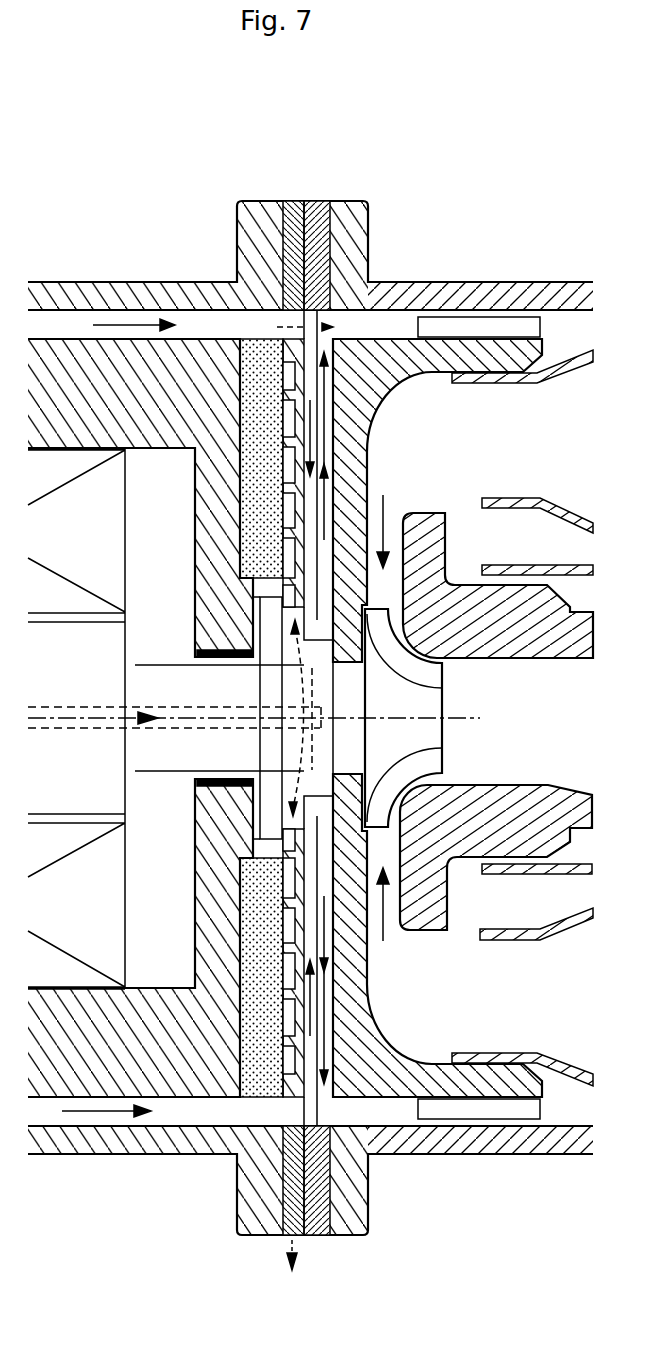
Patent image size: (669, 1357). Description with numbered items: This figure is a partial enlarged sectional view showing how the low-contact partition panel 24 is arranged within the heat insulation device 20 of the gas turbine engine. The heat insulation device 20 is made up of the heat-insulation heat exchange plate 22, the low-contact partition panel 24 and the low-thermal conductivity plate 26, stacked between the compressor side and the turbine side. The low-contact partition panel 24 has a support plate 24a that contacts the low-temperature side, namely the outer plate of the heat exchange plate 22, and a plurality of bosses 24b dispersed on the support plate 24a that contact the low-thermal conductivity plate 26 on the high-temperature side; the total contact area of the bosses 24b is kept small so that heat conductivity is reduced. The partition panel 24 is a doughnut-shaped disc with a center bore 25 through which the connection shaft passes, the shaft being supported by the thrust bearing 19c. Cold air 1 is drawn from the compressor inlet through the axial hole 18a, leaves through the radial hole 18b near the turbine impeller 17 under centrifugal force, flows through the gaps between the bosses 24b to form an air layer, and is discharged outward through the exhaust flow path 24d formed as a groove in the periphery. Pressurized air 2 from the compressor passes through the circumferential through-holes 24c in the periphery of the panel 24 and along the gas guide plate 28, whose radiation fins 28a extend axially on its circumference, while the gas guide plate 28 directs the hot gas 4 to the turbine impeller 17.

The air 1 is at (80, 720).
The pressurized air 2 is at (135, 323).
The hot gas 4 is at (385, 500).
The turbine impeller 17 is at (388, 748).
The axial hole 18a is at (172, 730).
The radial hole 18b is at (312, 696).
The thrust bearing 19c is at (273, 642).
The heat insulation device 20 is at (211, 231).
The heat-insulation heat exchange plate 22 is at (335, 340).
The low-contact partition panel 24 is at (253, 732).
The support plate 24a is at (283, 481).
The bosses 24b is at (283, 520).
The through-holes 24c is at (288, 317).
The exhaust flow path 24d is at (310, 1235).
The center bore 25 is at (295, 613).
The low-thermal conductivity plate 26 is at (262, 373).
The gas guide plate 28 is at (383, 380).
The radiation fins 28a is at (460, 327).